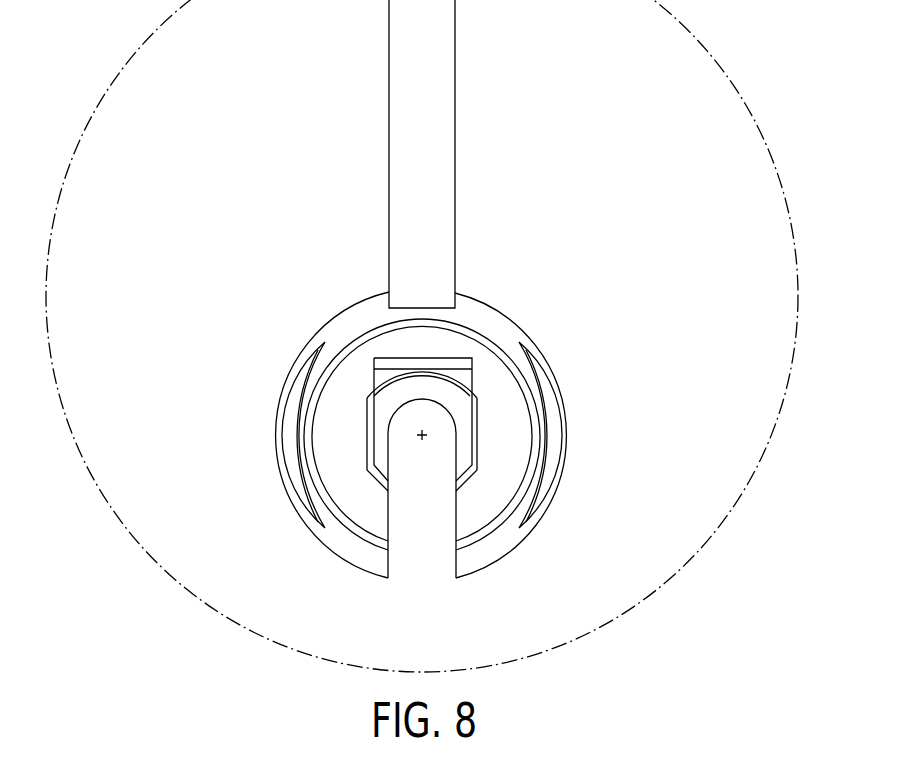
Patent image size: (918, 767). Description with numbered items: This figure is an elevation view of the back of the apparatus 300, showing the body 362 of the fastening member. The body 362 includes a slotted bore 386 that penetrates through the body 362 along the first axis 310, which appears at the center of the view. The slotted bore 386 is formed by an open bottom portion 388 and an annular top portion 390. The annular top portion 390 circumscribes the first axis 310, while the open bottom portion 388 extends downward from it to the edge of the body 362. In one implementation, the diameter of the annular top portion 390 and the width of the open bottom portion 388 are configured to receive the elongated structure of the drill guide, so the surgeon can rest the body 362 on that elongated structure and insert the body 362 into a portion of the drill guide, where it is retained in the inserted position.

The apparatus 300 is at (570, 74).
The body 362 is at (563, 289).
The slotted bore 386 is at (598, 400).
The open bottom portion 388 is at (436, 584).
The annular top portion 390 is at (453, 415).
The first axis 310 is at (421, 436).